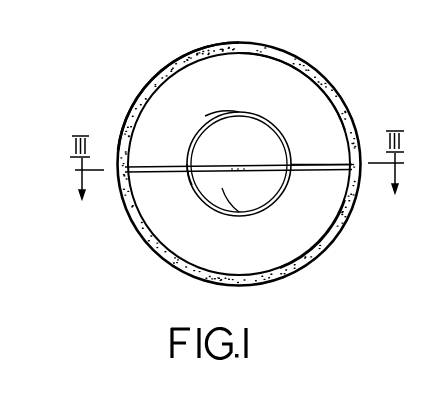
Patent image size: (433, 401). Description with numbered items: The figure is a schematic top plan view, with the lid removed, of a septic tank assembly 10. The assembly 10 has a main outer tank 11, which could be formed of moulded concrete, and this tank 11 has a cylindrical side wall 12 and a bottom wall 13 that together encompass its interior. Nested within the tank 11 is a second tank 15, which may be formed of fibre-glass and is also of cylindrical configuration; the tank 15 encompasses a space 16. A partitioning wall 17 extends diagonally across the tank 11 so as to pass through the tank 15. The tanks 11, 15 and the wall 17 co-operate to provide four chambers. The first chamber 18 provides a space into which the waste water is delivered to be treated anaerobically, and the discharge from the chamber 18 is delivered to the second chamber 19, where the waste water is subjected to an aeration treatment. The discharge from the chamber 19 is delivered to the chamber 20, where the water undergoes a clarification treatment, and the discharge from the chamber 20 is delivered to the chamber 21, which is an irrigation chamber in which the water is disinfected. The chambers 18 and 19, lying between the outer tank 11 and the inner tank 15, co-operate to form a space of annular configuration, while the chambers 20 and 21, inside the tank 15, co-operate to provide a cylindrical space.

The assembly 10 is at (298, 50).
The main outer tank 11 is at (160, 64).
The cylindrical side wall 12 is at (125, 145).
The bottom wall 13 is at (210, 93).
The second tank 15 is at (186, 192).
The space 16 is at (198, 159).
The partitioning wall 17 is at (308, 171).
The first chamber 18 is at (326, 208).
The second chamber 19 is at (325, 129).
The chamber 20 is at (206, 146).
The chamber 21 is at (219, 195).